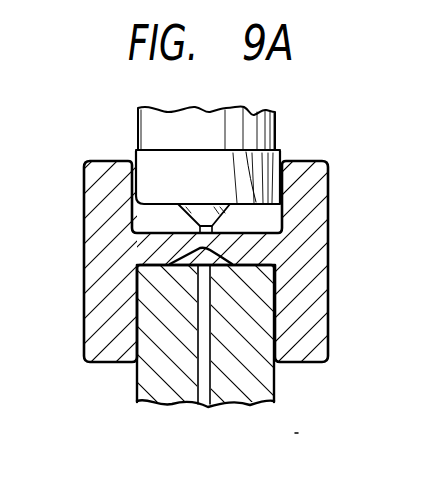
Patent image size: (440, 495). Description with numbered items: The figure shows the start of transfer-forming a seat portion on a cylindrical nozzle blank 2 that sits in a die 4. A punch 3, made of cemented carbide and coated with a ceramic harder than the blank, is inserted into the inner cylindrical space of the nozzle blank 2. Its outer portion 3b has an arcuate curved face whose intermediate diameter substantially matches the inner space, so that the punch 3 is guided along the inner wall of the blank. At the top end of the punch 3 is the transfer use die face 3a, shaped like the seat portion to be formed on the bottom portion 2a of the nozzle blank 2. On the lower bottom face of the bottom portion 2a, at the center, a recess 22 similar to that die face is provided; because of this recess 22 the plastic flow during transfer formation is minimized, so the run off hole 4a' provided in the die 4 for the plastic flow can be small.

The punch 3 is at (148, 129).
The transfer use die face 3a is at (288, 222).
The outer portion of the punch 3b is at (258, 162).
The cylindrical nozzle blank 2 is at (317, 246).
The bottom portion 2a is at (152, 246).
The recess 22 is at (212, 260).
The die 4 is at (253, 328).
The channel 4a' is at (121, 335).